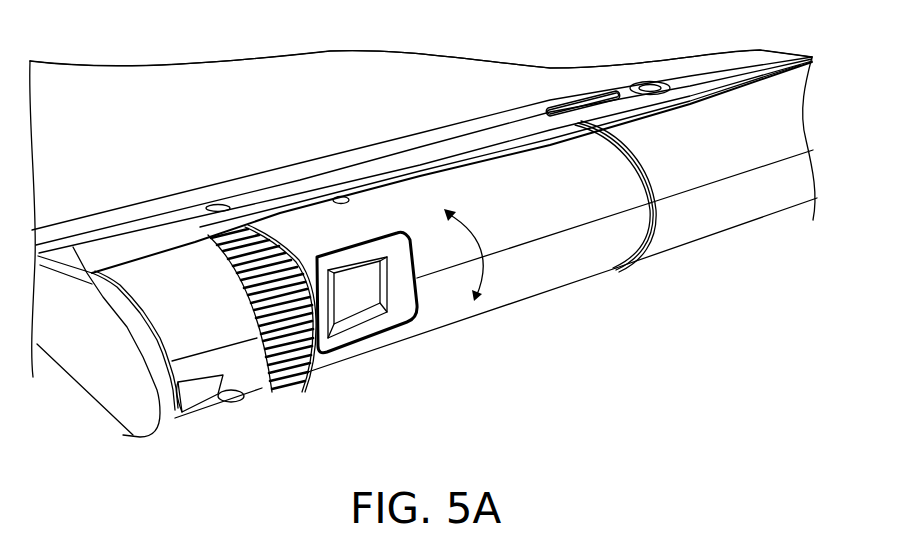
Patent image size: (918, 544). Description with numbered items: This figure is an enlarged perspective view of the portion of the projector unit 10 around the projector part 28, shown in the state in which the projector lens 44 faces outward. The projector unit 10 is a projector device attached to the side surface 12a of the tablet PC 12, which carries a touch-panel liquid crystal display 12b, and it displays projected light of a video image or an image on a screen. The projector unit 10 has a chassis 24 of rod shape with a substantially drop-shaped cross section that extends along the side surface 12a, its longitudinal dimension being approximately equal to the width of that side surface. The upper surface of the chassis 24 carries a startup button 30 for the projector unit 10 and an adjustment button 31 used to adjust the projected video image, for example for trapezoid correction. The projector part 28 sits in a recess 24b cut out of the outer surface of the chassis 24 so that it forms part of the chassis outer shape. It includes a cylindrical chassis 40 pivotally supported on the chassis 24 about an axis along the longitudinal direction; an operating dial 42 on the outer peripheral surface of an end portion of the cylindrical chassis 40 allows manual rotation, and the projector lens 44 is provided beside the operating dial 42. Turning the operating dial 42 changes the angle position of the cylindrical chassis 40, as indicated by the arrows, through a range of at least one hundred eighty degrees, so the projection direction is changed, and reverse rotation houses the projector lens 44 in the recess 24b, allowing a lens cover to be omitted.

The projector unit 10 is at (651, 296).
The tablet PC 12 is at (116, 146).
The side surface 12a is at (73, 247).
The display 12b is at (177, 110).
The chassis 24 is at (720, 233).
The recess 24b is at (350, 198).
The projector part 28 is at (452, 335).
The startup button 30 is at (645, 82).
The adjustment button 31 is at (583, 106).
The cylindrical chassis 40 is at (531, 303).
The operating dial 42 is at (300, 378).
The projector lens 44 is at (357, 302).